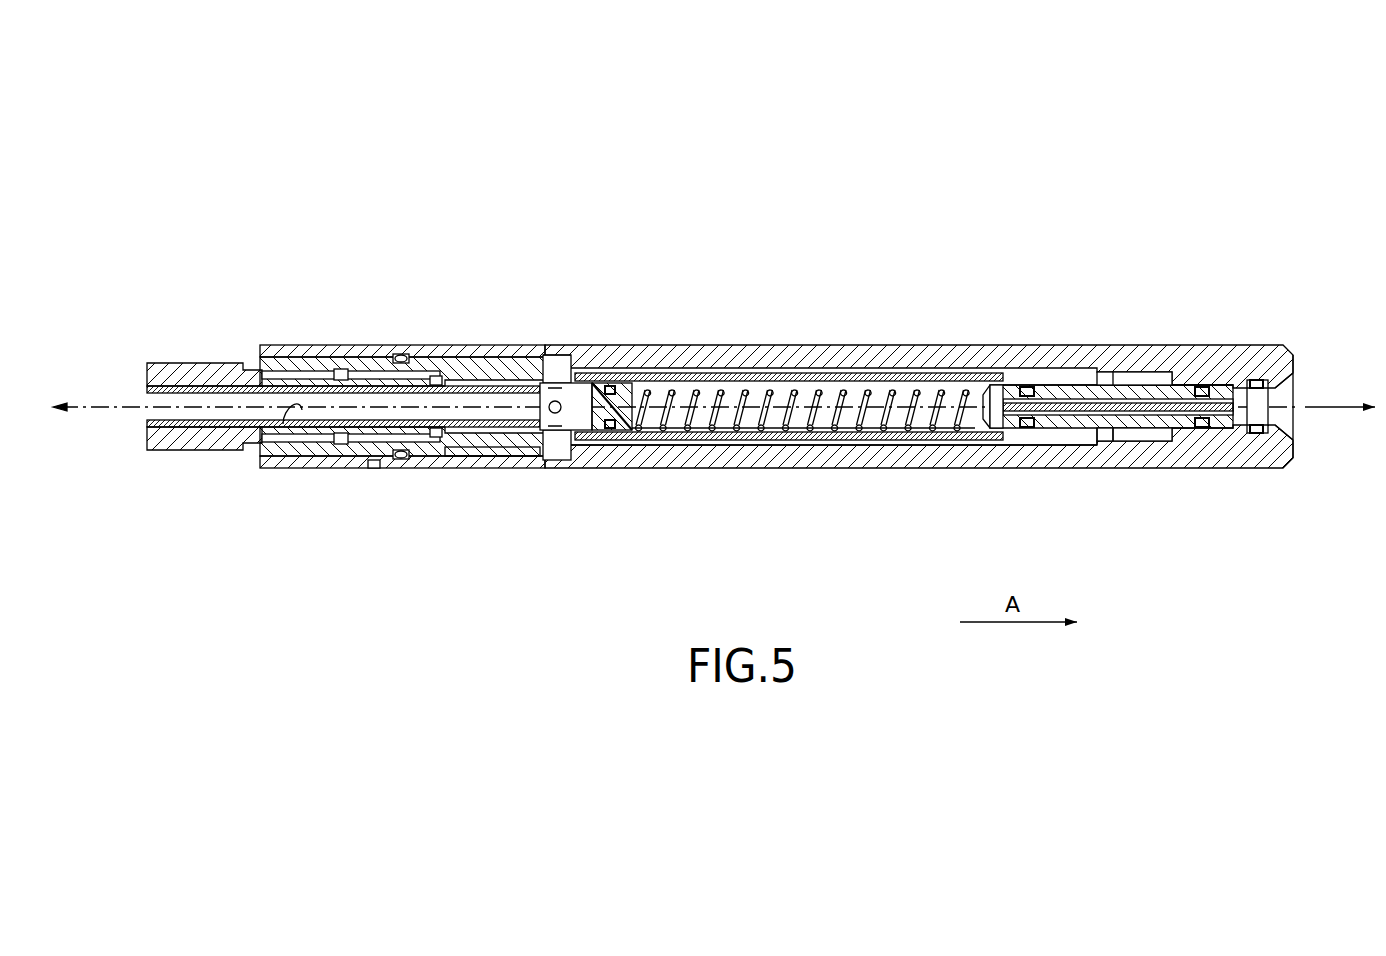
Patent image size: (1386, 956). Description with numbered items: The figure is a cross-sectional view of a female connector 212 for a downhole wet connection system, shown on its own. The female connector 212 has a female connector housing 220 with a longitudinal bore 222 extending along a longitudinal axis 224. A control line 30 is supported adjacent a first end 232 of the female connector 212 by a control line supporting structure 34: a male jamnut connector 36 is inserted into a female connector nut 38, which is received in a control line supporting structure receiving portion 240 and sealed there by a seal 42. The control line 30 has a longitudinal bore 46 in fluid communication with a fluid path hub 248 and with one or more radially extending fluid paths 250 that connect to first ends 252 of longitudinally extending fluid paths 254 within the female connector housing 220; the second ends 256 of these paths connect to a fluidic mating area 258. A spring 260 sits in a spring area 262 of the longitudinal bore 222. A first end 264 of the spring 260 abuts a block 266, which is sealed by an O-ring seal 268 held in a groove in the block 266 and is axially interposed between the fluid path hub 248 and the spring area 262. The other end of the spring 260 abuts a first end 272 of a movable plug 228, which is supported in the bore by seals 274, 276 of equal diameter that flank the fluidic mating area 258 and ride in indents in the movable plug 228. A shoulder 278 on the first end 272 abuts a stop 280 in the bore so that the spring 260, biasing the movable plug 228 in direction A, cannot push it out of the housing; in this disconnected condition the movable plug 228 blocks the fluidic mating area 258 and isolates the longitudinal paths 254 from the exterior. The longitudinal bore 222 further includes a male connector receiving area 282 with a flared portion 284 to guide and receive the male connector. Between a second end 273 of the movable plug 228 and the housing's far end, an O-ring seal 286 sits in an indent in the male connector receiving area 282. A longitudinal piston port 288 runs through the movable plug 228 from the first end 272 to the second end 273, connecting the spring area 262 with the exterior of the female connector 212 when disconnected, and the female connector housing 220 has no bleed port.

The female connector 212 is at (368, 148).
The longitudinal axis 224 is at (100, 405).
The male jamnut connector 36 is at (235, 358).
The control line 30 is at (228, 430).
The longitudinal bore 46 is at (292, 420).
The control line supporting structure 34 is at (348, 345).
The female connector nut 38 is at (292, 345).
The seal 42 is at (400, 355).
The first end 232 is at (382, 468).
The control line supporting structure receiving portion 240 is at (440, 468).
The female connector housing 220 is at (1175, 345).
The longitudinal bore 222 is at (847, 466).
The flared portion 284 is at (1290, 385).
The longitudinally extending fluid paths 254 is at (795, 375).
The fluid path hub 248 is at (545, 432).
The radially extending fluid paths 250 is at (571, 435).
The first ends 252 is at (548, 355).
The first end 264 is at (640, 432).
The block 266 is at (622, 415).
The seal 268 is at (605, 385).
The spring 260 is at (773, 387).
The spring area 262 is at (905, 430).
The second ends 256 is at (1100, 380).
The first end 272 is at (1000, 385).
The stop 280 is at (1003, 385).
The shoulder 278 is at (977, 442).
The seal 274 is at (1028, 432).
The seal 276 is at (1202, 432).
The movable plug 228 is at (1120, 378).
The fluidic mating area 258 is at (1140, 442).
The longitudinal piston port 288 is at (1118, 432).
The seal 286 is at (1260, 380).
The male connector receiving area 282 is at (1255, 380).
The second end 273 is at (1232, 445).